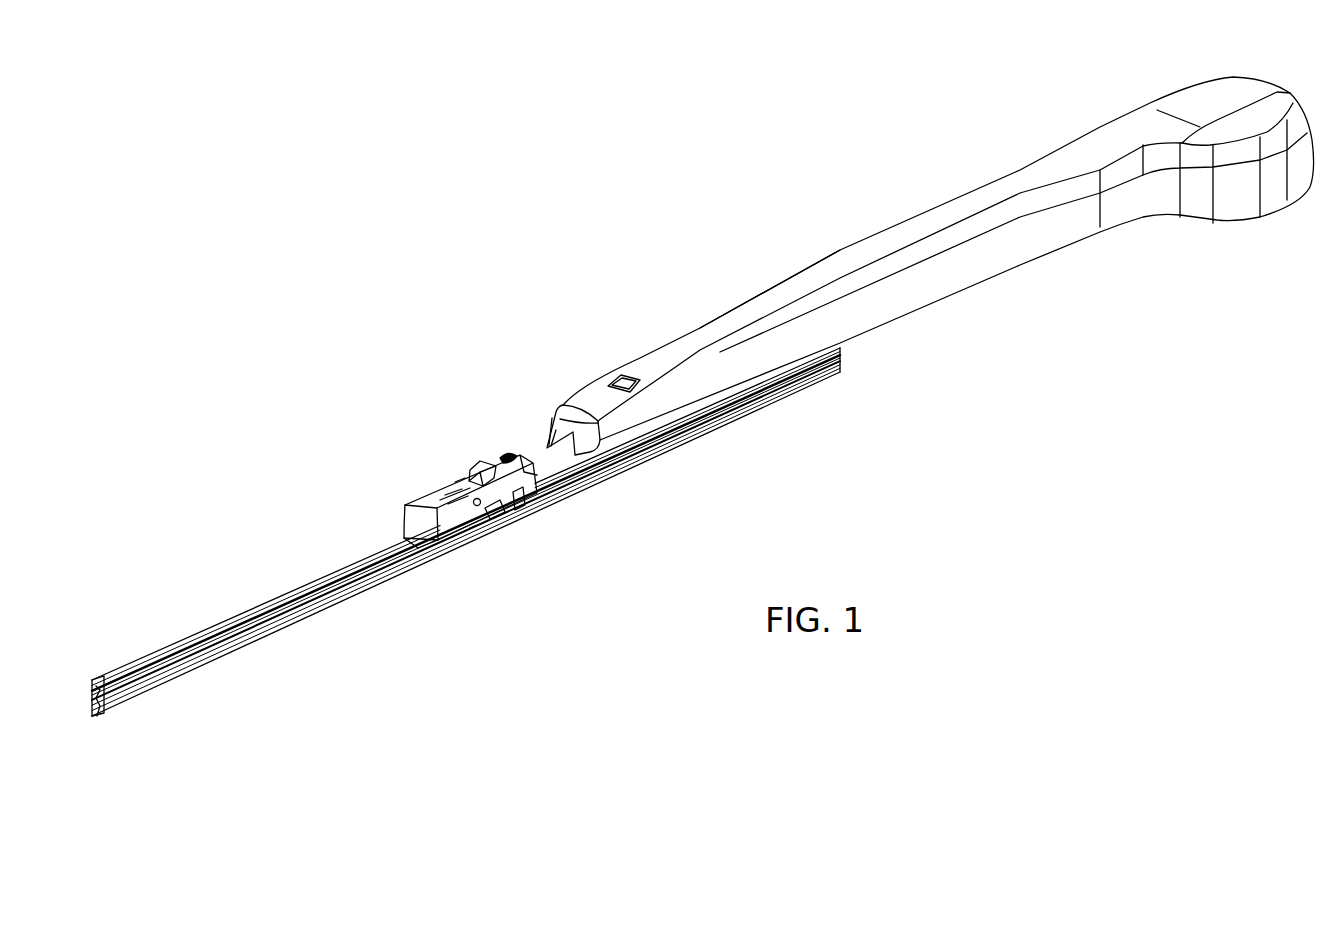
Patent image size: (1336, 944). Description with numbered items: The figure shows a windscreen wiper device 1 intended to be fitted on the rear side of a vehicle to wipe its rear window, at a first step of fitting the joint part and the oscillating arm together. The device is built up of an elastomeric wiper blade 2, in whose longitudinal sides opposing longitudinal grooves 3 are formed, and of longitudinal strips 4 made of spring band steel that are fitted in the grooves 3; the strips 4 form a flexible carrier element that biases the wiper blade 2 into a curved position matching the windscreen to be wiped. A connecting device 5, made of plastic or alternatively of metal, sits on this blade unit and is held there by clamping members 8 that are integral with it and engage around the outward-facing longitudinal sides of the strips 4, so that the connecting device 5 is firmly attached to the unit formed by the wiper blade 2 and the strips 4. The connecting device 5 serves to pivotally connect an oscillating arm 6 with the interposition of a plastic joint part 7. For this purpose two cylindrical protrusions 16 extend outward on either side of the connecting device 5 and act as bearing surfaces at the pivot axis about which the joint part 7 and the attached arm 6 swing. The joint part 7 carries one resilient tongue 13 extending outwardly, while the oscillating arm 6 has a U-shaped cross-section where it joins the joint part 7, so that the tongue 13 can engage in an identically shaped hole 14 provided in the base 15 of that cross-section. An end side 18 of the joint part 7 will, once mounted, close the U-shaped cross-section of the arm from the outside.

The windscreen wiper device 1 is at (672, 268).
The wiper blade 2 is at (247, 648).
The longitudinal grooves 3 is at (337, 572).
The longitudinal strips 4 is at (93, 683).
The connecting device 5 is at (525, 505).
The oscillating arm 6 is at (957, 205).
The joint part 7 is at (437, 498).
The clamping members 8 is at (470, 538).
The resilient tongue 13 is at (487, 460).
The hole 14 is at (630, 377).
The base 15 is at (732, 320).
The cylindrical protrusions 16 is at (498, 512).
The end side 18 is at (430, 545).